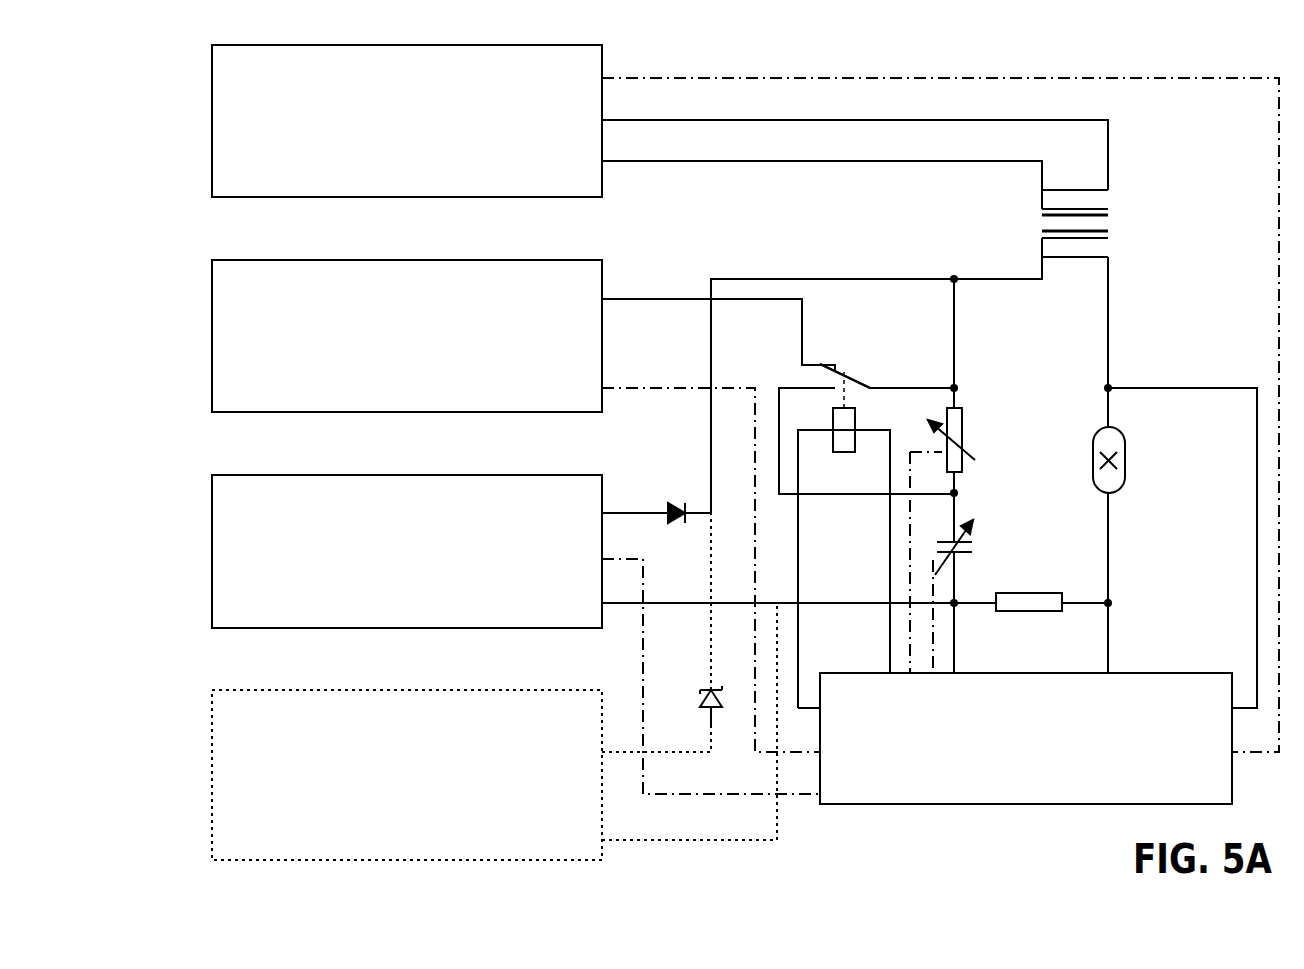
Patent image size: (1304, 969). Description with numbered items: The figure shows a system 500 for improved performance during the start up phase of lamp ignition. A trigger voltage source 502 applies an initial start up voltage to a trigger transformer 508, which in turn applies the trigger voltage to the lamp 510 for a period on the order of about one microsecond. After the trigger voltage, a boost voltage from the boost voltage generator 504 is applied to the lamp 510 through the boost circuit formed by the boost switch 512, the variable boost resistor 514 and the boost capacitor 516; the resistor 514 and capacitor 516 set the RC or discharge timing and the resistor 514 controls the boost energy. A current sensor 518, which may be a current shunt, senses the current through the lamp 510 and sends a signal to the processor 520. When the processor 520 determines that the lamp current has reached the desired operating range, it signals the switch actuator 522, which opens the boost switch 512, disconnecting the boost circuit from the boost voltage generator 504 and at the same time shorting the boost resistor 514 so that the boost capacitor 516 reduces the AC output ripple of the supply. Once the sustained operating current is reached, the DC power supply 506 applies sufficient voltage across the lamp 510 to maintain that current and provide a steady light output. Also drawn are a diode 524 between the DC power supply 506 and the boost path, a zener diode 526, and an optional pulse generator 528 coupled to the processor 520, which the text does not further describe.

The system 500 is at (888, 860).
The trigger voltage source 502 is at (427, 150).
The boost voltage generator 504 is at (427, 378).
The DC power supply 506 is at (427, 595).
The trigger transformer 508 is at (1112, 249).
The lamp 510 is at (1125, 460).
The boost switch 512 is at (851, 376).
The variable boost resistor 514 is at (963, 432).
The boost capacitor 516 is at (975, 555).
The current sensor 518 is at (1035, 611).
The processor 520 is at (1047, 755).
The switch actuator 522 is at (848, 452).
The diode 524 is at (680, 502).
The zener diode 526 is at (708, 688).
The pulse generator 528 is at (427, 818).